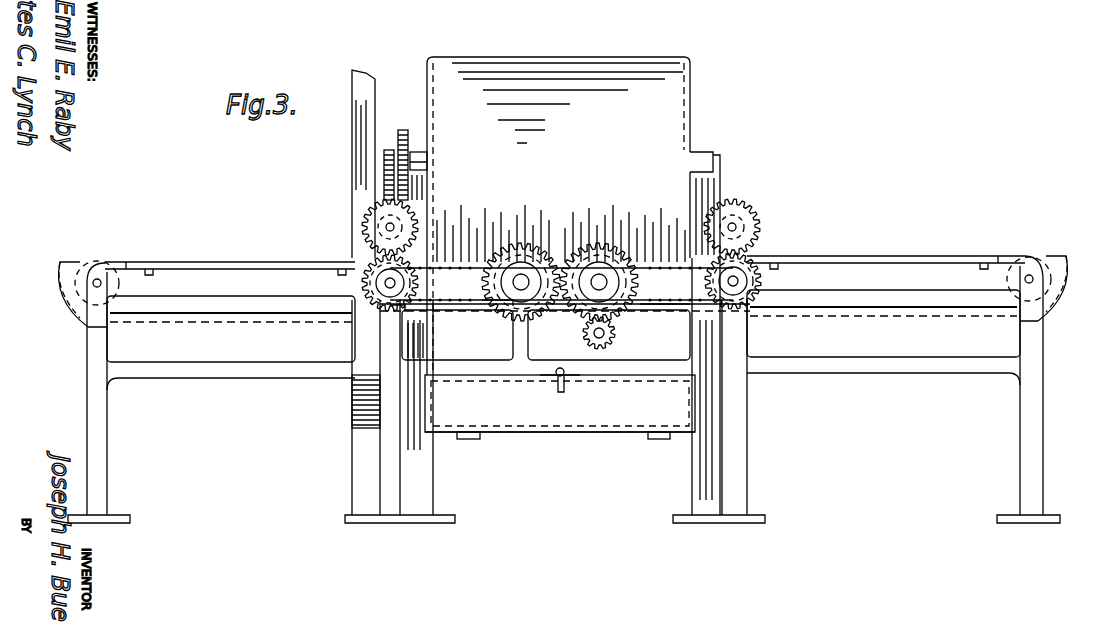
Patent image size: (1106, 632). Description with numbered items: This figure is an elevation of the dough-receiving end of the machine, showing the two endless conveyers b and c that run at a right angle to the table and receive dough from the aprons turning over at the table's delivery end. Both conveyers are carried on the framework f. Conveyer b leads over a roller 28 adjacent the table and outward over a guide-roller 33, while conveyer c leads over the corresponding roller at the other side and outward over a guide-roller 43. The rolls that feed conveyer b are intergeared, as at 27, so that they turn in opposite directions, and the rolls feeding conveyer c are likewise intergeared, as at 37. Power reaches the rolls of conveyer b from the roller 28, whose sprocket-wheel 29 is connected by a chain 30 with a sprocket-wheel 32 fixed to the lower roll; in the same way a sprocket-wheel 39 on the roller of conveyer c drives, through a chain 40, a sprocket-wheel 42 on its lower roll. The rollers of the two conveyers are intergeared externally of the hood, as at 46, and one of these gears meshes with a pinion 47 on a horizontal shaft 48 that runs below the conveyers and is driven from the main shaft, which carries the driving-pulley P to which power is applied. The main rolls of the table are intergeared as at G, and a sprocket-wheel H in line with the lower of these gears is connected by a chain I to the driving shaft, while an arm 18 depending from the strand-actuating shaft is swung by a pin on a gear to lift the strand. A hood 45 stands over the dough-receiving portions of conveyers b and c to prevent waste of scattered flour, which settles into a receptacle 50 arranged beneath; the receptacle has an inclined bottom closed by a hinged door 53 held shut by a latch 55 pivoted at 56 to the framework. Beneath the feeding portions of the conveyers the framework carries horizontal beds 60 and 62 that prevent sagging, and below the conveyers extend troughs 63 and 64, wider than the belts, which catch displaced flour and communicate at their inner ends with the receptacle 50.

The hood 45 is at (686, 92).
The arm 18 is at (717, 181).
The sprocket-wheel H is at (384, 160).
The chain I is at (398, 177).
The gears G is at (408, 188).
The gears 46 is at (559, 256).
The gears 27 is at (367, 256).
The gears 37 is at (750, 262).
The endless conveyer b is at (129, 262).
The endless conveyer c is at (998, 256).
The bed 60 is at (226, 262).
The guide-roller 33 is at (112, 297).
The trough 63 is at (165, 322).
The roller 28 is at (481, 283).
The sprocket-wheel 42 is at (707, 279).
The chain 30 is at (460, 306).
The sprocket-wheel 29 is at (497, 304).
The sprocket-wheel 32 is at (405, 302).
The pinion 47 is at (583, 333).
The sprocket-wheel 39 is at (621, 306).
The chain 40 is at (663, 306).
The shaft 48 is at (604, 340).
The bed 62 is at (885, 258).
The trough 64 is at (897, 316).
The guide-roller 43 is at (1010, 300).
The driving-pulley P is at (352, 428).
The receptacle 50 is at (535, 433).
The door 53 is at (556, 413).
The latch 55 is at (567, 382).
The pivot 56 is at (556, 375).